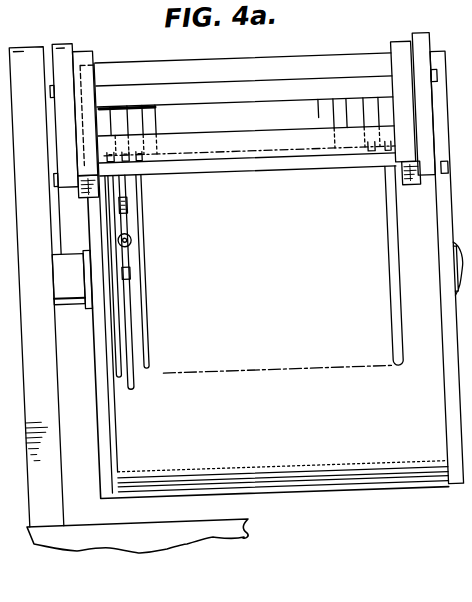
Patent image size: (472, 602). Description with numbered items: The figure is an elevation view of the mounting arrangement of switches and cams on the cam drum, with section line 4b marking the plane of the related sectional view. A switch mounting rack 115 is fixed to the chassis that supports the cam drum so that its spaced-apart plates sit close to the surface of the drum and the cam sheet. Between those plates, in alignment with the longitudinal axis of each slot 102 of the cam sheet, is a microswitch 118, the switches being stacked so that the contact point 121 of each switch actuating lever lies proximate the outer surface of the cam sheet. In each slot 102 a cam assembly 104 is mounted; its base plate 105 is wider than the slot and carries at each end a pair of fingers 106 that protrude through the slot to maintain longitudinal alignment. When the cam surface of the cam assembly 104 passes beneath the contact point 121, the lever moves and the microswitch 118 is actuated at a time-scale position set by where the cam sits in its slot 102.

The slot 102 is at (137, 320).
The cam assembly 104 is at (123, 239).
The base plate 105 is at (115, 259).
The fingers 106 is at (118, 205).
The switch mounting rack 115 is at (270, 154).
The microswitch 118 is at (149, 127).
The contact point 121 is at (129, 163).
The section line 4b is at (114, 27).